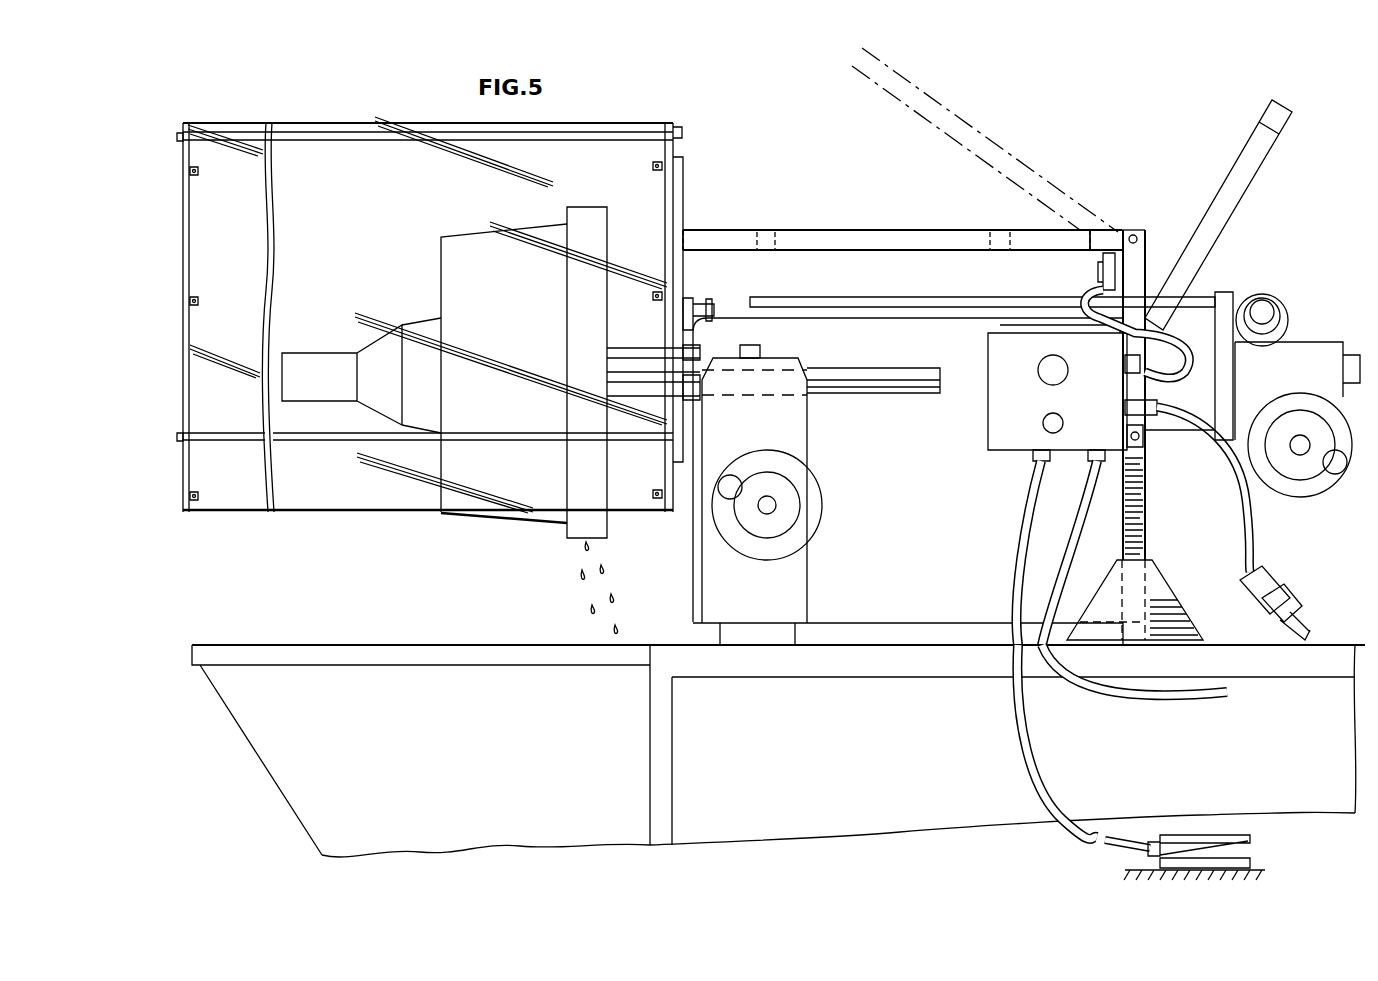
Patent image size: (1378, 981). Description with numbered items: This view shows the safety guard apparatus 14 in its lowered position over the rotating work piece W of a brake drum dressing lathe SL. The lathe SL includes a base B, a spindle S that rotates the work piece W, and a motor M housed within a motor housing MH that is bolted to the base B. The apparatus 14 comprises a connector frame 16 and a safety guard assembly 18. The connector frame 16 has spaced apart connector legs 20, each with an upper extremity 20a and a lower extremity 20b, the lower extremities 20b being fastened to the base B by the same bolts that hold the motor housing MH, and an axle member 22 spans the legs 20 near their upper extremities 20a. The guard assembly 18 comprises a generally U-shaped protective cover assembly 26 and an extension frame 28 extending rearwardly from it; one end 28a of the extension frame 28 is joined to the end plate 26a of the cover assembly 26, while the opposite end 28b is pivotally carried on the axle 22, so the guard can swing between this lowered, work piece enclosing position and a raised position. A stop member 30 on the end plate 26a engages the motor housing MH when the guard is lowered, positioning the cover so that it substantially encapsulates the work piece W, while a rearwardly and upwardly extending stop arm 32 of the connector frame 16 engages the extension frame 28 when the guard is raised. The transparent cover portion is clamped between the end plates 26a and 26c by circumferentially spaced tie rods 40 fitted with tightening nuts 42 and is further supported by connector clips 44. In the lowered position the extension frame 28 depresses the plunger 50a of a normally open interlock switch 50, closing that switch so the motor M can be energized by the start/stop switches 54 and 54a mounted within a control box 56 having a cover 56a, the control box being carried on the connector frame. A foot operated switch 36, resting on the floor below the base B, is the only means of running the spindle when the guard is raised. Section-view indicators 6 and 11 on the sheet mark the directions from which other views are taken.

The section line 6- 6 is at (291, 121).
The section line 11- 11 is at (1346, 100).
The safety apparatus 14 is at (750, 128).
The connector frame 16 is at (1158, 505).
The safety guard assembly 18 is at (834, 216).
The connector legs 20 is at (1147, 472).
The upper extremity 20a is at (1140, 256).
The lower extremity 20b is at (1130, 598).
The axle member 22 is at (1130, 232).
The protective cover assembly 26 is at (302, 116).
The end plate 26a is at (686, 175).
The end plate 26c is at (429, 157).
The extension frame 28 is at (899, 240).
The end of extension frame 28a is at (703, 240).
The opposite end of extension frame 28b is at (1075, 231).
The stop member 30 is at (714, 298).
The stop arm 32 is at (1265, 152).
The foot operated switch means 36 is at (1210, 838).
The tie rods 40 is at (305, 140).
The tightening nuts 42 is at (180, 132).
The connector clips 44 is at (198, 176).
The interlock switch 50 is at (1110, 276).
The plunger 50a is at (1103, 258).
The start/stop switch 54 is at (1035, 356).
The start/stop switch 54a is at (1045, 424).
The control box 56 is at (975, 402).
The cover 56a is at (1002, 438).
The base B is at (1010, 650).
The motor M is at (838, 338).
The motor housing MH is at (903, 533).
The spindle S is at (618, 348).
The specialty lathe SL is at (1298, 352).
The work piece W is at (470, 242).